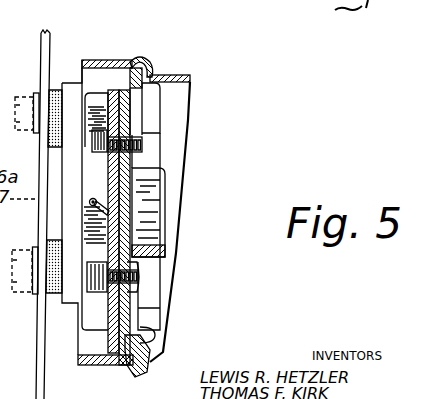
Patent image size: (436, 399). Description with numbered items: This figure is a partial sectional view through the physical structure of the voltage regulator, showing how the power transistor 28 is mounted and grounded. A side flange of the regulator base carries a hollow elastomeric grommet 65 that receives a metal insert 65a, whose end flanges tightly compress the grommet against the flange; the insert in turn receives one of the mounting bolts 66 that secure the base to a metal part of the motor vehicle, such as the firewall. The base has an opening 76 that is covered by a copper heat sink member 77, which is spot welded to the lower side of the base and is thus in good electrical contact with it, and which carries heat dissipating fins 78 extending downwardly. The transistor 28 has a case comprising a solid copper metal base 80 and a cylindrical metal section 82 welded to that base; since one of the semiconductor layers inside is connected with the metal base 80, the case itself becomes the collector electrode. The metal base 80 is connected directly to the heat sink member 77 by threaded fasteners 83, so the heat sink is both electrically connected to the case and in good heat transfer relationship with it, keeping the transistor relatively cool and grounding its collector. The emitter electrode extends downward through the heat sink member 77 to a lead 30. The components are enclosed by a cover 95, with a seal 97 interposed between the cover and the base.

The transistor 28 is at (178, 226).
The lead 30 is at (90, 203).
The grommet 65 is at (55, 297).
The metal insert 65a is at (50, 92).
The mounting bolts 66 is at (15, 97).
The opening 76 is at (131, 137).
The heat sink member 77 is at (132, 307).
The heat dissipating fins 78 is at (98, 100).
The metal base 80 is at (125, 201).
The cylindrical metal section 82 is at (166, 171).
The threaded fasteners 83 is at (142, 143).
The cover 95 is at (185, 76).
The seal 97 is at (138, 347).